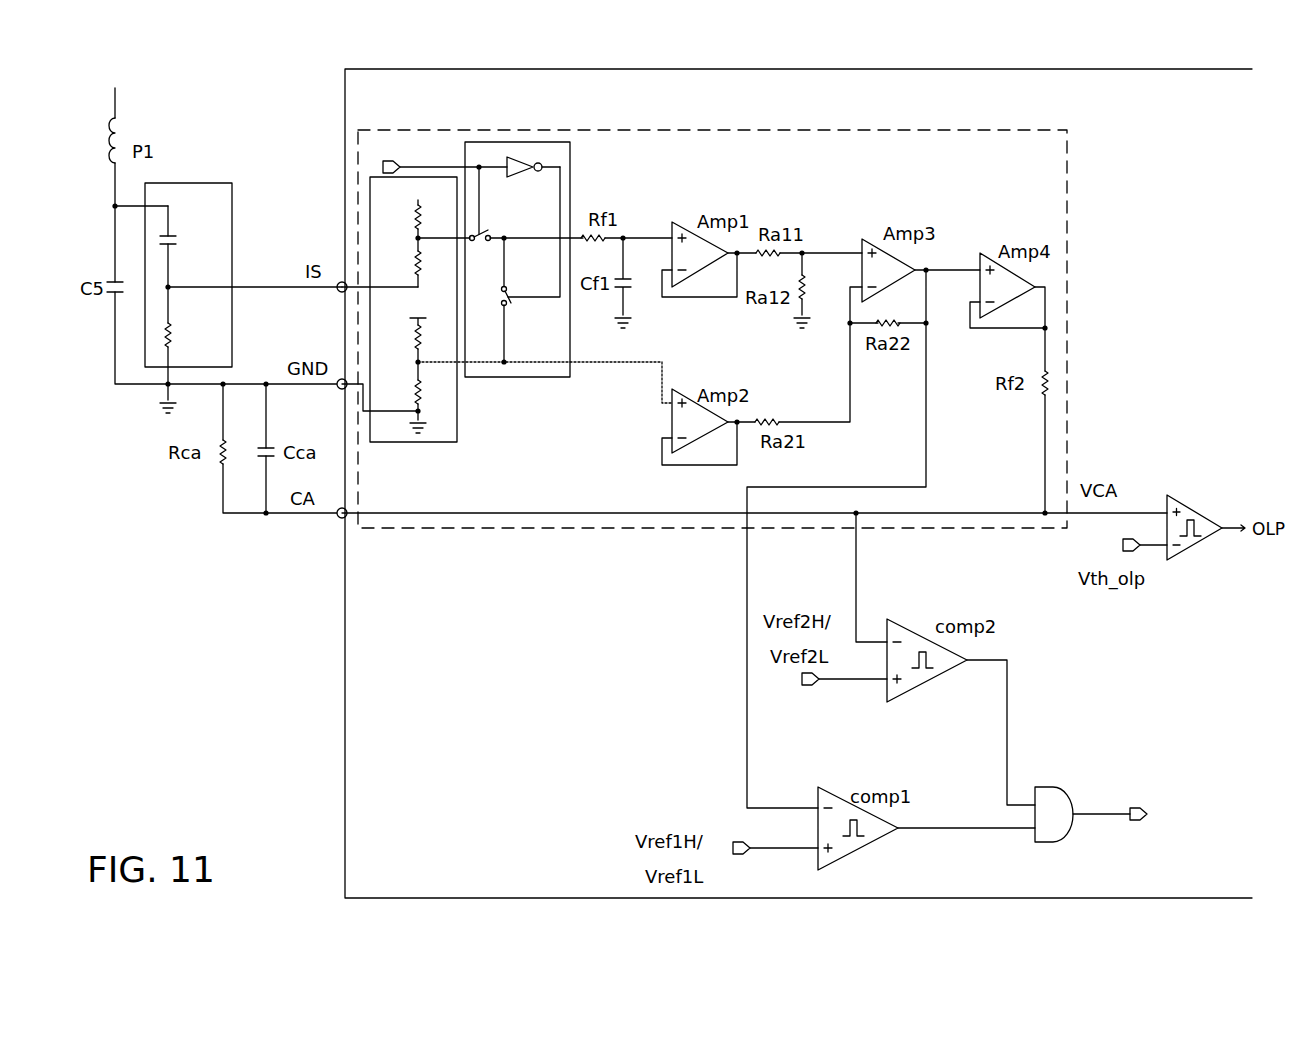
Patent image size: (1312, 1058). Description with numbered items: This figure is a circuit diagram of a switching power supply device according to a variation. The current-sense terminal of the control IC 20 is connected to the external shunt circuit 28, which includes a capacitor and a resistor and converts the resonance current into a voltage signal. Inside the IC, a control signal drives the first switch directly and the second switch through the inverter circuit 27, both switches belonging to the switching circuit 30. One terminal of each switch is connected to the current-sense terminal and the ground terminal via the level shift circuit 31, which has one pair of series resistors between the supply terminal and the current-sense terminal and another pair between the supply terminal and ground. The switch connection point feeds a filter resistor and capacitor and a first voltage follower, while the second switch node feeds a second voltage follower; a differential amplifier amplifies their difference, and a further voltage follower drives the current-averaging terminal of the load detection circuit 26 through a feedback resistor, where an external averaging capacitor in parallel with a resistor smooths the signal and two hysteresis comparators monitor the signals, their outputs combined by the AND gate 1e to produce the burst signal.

The control IC 20 is at (345, 138).
The load detection circuit 26 is at (455, 130).
The inverter circuit 27 is at (533, 159).
The shunt circuit 28 is at (190, 183).
The switching circuit 30 is at (570, 190).
The level shift circuit 31 is at (457, 414).
The AND gate 1e is at (1050, 787).